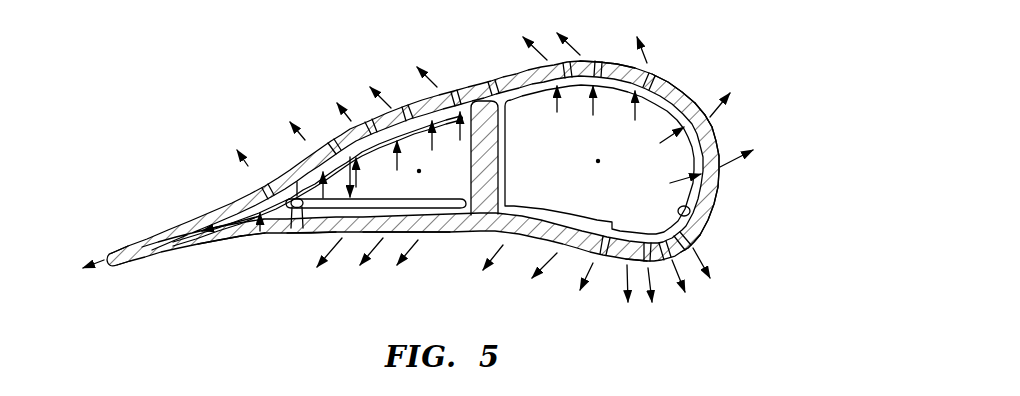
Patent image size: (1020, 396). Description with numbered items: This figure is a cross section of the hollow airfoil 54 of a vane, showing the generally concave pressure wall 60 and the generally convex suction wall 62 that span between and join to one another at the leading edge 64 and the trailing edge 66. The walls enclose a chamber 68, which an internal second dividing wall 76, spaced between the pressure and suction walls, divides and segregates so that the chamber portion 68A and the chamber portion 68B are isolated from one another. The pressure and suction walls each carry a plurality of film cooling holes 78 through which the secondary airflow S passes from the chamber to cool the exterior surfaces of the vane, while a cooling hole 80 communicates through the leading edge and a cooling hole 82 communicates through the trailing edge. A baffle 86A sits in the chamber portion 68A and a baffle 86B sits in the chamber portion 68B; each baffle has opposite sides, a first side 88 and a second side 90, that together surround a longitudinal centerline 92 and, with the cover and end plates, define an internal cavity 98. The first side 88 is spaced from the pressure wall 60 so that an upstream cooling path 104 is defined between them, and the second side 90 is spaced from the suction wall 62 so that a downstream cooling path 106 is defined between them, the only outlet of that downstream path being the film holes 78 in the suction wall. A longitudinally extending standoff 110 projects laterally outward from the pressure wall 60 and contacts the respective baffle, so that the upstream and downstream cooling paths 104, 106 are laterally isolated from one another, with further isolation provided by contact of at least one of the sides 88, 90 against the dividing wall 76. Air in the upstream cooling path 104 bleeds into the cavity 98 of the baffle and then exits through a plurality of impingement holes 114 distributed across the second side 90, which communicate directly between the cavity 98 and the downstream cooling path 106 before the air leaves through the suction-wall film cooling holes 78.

The hollow airfoil 54 is at (757, 80).
The pressure wall 60 is at (405, 236).
The suction wall 62 is at (472, 98).
The leading edge 64 is at (735, 147).
The trailing edge 66 is at (109, 250).
The chamber 68 is at (259, 240).
The first chamber portion 68A is at (240, 237).
The second chamber portion 68B is at (674, 103).
The second dividing wall 76 is at (505, 60).
The film cooling holes 78 is at (366, 124).
The leading edge cooling hole 80 is at (692, 205).
The trailing edge cooling hole 82 is at (120, 266).
The first baffle 86A is at (318, 140).
The second baffle 86B is at (598, 211).
The first side 88 is at (447, 212).
The second side 90 is at (484, 100).
The longitudinal centerline 92 is at (418, 170).
The internal cavity 98 is at (435, 182).
The upstream cooling path 104 is at (311, 240).
The downstream cooling path 106 is at (257, 209).
The standoff 110 is at (294, 212).
The impingement holes 114 is at (591, 105).
The secondary airflow S is at (103, 270).